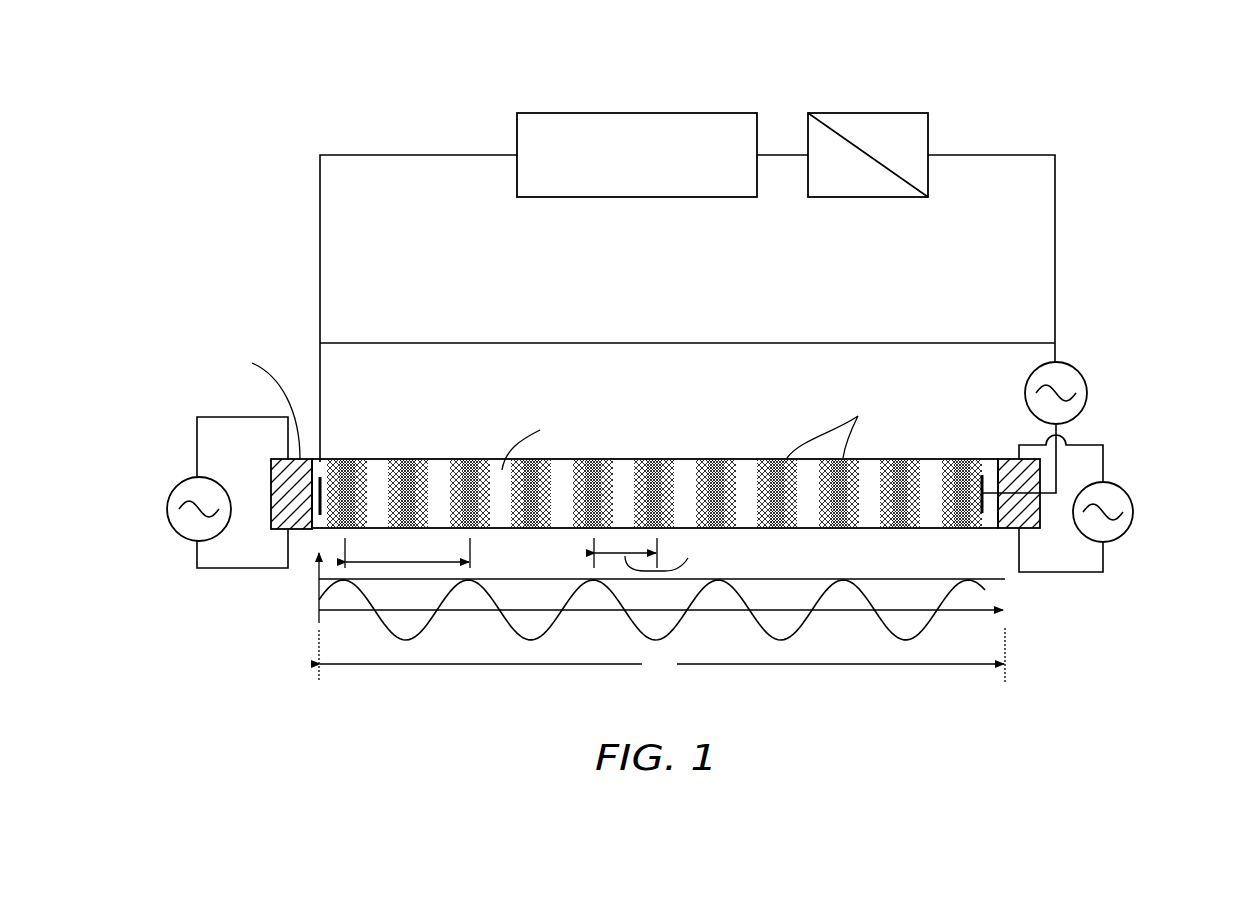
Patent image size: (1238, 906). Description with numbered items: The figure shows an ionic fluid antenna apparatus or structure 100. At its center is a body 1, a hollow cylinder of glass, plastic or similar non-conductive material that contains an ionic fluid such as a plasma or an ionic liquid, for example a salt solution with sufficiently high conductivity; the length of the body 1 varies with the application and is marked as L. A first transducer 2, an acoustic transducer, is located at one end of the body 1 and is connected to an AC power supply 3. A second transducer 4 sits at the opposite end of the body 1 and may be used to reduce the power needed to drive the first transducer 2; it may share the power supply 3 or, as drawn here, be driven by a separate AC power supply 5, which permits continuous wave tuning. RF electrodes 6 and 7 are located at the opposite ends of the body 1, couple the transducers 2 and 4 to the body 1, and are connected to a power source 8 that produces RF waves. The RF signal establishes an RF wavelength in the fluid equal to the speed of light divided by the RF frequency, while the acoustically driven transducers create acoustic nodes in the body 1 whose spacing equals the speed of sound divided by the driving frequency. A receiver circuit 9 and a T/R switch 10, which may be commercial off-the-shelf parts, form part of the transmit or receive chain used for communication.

The IFA apparatus or structure 100 is at (1135, 188).
The body 1 is at (380, 458).
The first transducer 2 is at (271, 497).
The AC power supply 3 is at (176, 532).
The second transducer 4 is at (1008, 459).
The separate AC power supply 5 is at (1128, 535).
The RF electrode 6 is at (327, 475).
The RF electrode 7 is at (985, 505).
The power source 8 is at (1070, 368).
The receiver circuit 9 is at (632, 113).
The T/R switch 10 is at (860, 113).